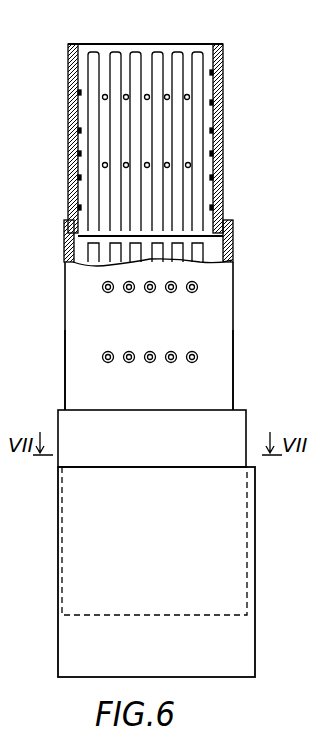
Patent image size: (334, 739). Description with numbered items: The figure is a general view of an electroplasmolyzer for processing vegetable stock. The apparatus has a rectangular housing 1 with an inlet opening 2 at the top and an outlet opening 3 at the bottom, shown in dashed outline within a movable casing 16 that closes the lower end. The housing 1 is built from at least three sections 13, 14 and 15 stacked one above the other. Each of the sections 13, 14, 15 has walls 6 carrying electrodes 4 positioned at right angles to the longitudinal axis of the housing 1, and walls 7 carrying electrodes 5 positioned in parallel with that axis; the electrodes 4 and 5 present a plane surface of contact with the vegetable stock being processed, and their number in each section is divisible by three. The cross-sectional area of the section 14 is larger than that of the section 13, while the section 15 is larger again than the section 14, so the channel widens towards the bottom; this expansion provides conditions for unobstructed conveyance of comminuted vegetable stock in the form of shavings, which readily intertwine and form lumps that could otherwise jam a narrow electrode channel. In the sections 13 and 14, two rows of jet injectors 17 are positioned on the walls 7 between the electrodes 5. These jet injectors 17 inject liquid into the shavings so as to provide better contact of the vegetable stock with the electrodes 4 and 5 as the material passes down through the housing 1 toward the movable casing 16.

The rectangular housing 1 is at (135, 334).
The inlet opening 2 is at (145, 138).
The outlet opening 3 is at (200, 615).
The electrodes 4 is at (69, 92).
The electrodes 5 is at (94, 52).
The walls 6 is at (224, 72).
The walls 7 is at (190, 55).
The section 13 is at (70, 185).
The section 14 is at (65, 343).
The section 15 is at (58, 427).
The movable casing 16 is at (58, 643).
The jet injectors 17 is at (191, 165).